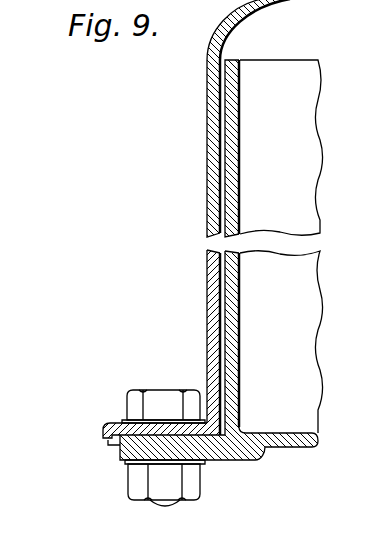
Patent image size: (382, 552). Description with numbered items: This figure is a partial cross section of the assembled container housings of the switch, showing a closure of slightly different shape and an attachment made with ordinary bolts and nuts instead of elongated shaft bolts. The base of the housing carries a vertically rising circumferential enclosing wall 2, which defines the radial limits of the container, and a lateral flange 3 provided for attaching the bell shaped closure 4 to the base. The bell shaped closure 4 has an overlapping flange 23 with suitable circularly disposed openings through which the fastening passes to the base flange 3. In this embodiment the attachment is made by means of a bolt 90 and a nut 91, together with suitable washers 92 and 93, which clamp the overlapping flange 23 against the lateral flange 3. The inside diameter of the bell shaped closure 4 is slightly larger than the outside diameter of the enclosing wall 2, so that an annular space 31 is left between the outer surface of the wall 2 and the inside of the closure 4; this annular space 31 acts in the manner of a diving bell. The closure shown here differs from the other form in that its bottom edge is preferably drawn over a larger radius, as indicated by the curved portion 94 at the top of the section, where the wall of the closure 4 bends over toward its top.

The enclosing wall 2 is at (240, 145).
The lateral flange 3 is at (123, 456).
The bell shaped closure 4 is at (182, 225).
The overlapping flange 23 is at (103, 437).
The annular space 31 is at (222, 208).
The bolt 90 is at (178, 377).
The nut 91 is at (192, 490).
The washer 92 is at (125, 420).
The washer 93 is at (205, 463).
The bottom edge of closure 94 is at (275, 0).